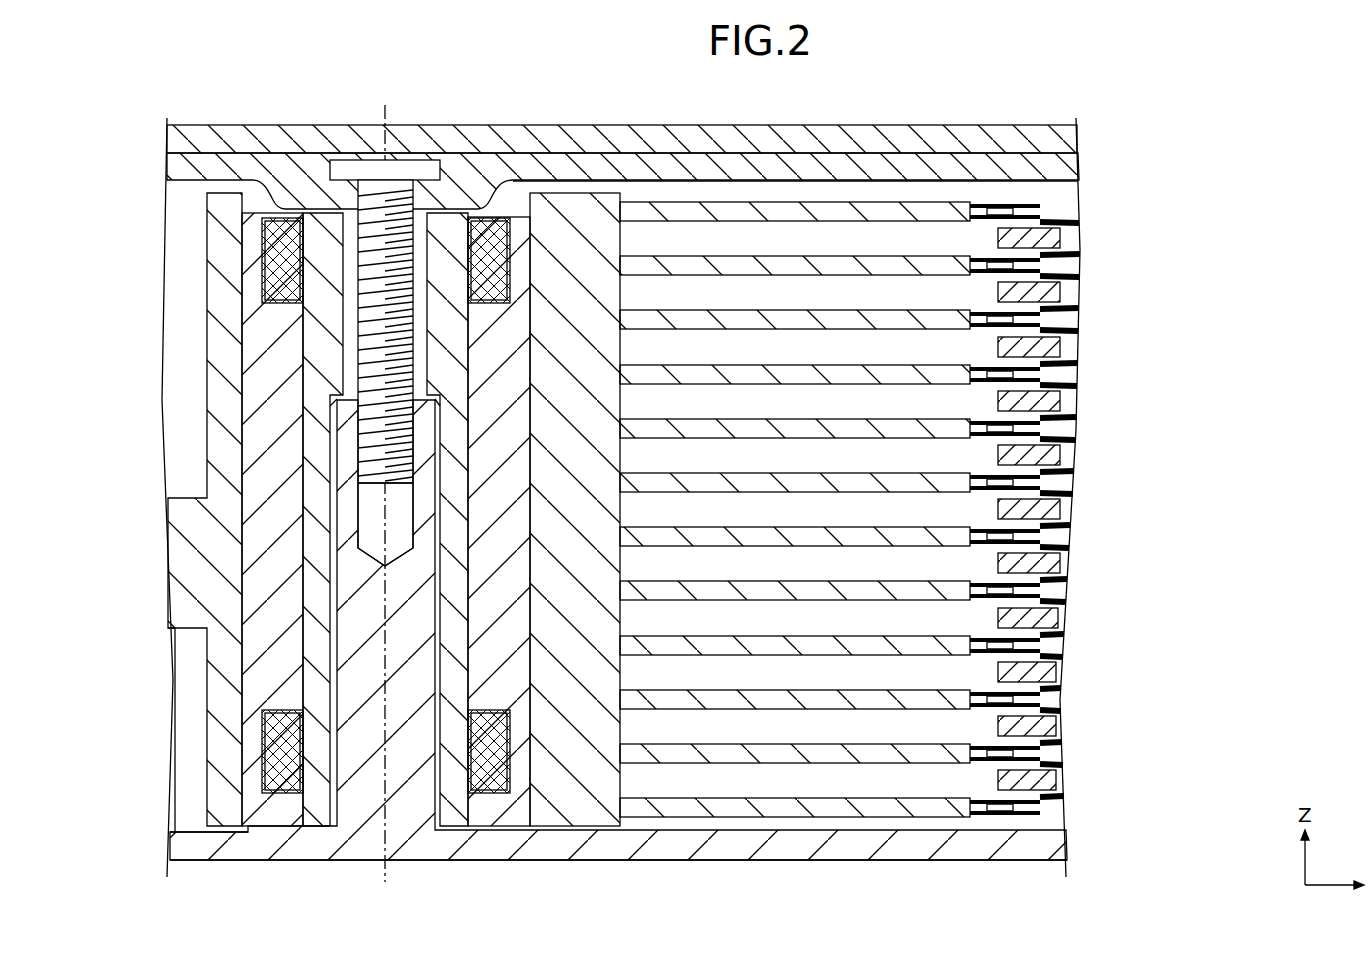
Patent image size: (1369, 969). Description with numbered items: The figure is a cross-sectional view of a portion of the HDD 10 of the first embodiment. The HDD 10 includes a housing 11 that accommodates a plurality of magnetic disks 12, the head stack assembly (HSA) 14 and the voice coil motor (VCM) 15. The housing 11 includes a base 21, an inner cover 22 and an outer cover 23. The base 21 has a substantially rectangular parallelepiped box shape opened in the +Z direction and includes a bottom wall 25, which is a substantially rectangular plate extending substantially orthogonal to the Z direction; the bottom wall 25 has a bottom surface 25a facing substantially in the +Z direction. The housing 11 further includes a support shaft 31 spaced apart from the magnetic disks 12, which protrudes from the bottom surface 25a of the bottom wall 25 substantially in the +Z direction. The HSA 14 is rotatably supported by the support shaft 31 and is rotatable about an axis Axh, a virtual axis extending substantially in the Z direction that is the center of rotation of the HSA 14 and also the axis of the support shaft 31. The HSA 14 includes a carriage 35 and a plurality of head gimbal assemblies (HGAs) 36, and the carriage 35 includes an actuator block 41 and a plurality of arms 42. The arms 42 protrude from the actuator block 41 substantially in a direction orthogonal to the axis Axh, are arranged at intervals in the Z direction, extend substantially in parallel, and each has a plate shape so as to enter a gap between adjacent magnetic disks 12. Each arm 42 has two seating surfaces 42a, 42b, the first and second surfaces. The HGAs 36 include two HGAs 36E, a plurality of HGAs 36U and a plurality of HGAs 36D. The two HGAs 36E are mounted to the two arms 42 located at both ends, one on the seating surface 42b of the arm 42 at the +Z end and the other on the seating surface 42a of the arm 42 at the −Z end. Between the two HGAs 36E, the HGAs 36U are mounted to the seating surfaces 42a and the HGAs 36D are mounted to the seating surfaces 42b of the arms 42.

The HDD 10 is at (122, 105).
The housing 11 is at (180, 872).
The magnetic disk 12 is at (1077, 240).
The head stack assembly 14 is at (626, 185).
The voice coil motor 15 is at (176, 475).
The base 21 is at (480, 873).
The inner cover 22 is at (893, 140).
The outer cover 23 is at (832, 168).
The bottom wall 25 is at (752, 848).
The bottom surface 25a is at (178, 830).
The support shaft 31 is at (343, 408).
The carriage 35 is at (568, 205).
The head gimbal assembly 36 is at (1122, 521).
The HGA 36E is at (1072, 211).
The HGA 36U is at (1086, 256).
The HGA 36D is at (1087, 281).
The actuator block 41 is at (575, 446).
The arm 42 is at (778, 205).
The seating surface 42a is at (982, 205).
The seating surface 42b is at (1043, 210).
The axis Axh is at (385, 113).